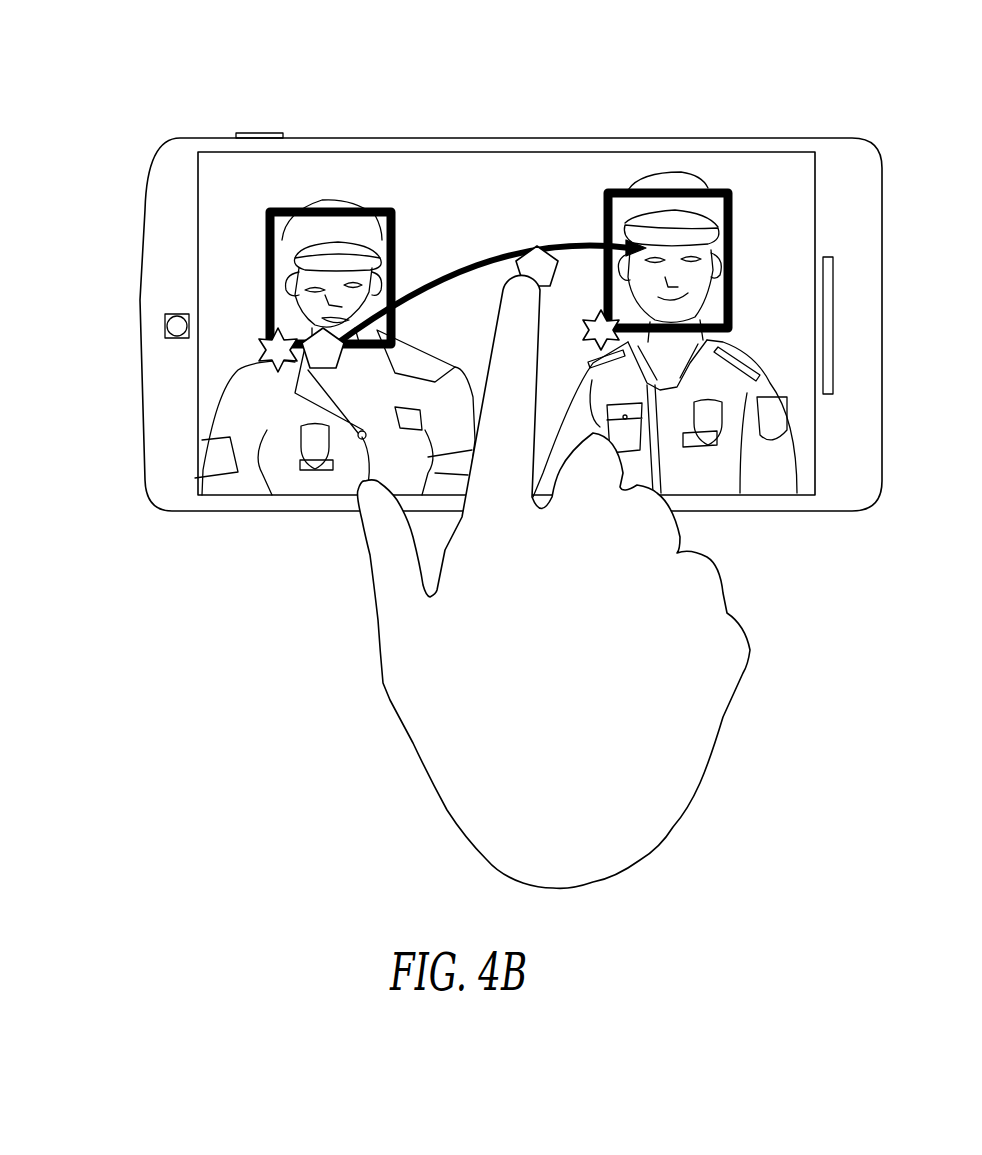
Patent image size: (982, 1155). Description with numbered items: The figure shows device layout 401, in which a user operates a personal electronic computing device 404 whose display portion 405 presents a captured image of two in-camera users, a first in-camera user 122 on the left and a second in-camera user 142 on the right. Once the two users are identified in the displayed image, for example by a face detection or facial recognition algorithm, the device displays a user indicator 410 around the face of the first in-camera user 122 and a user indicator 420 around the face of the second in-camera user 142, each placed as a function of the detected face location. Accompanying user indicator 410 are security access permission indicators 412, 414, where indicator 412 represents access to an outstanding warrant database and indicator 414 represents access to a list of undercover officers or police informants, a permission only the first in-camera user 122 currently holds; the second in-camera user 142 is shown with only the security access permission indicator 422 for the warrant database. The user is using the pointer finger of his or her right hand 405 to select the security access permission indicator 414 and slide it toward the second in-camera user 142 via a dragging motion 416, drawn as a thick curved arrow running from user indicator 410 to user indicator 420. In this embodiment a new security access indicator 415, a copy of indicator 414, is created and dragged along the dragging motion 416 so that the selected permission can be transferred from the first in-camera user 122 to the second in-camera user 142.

The device layout 401 is at (120, 40).
The personal electronic computing device 404 is at (143, 218).
The display portion 405 is at (195, 182).
The user indicator 410 is at (310, 207).
The first in-camera user 122 is at (338, 192).
The dragging motion 416 is at (467, 265).
The new security access indicator 415 is at (535, 246).
The security access permission indicator 422 is at (598, 312).
The user indicator 420 is at (612, 188).
The second in-camera user 142 is at (716, 182).
The security access permission indicator 412 is at (262, 350).
The security access permission indicator 414 is at (308, 368).